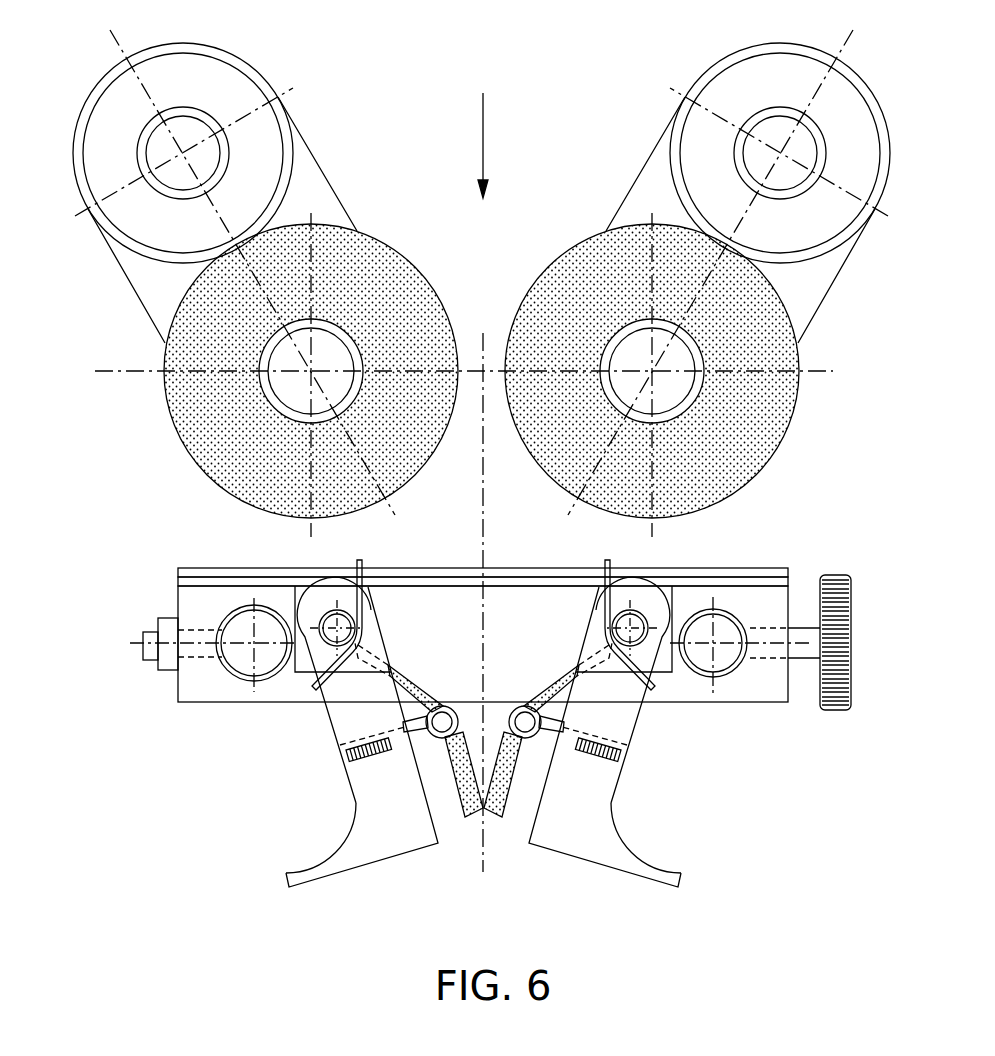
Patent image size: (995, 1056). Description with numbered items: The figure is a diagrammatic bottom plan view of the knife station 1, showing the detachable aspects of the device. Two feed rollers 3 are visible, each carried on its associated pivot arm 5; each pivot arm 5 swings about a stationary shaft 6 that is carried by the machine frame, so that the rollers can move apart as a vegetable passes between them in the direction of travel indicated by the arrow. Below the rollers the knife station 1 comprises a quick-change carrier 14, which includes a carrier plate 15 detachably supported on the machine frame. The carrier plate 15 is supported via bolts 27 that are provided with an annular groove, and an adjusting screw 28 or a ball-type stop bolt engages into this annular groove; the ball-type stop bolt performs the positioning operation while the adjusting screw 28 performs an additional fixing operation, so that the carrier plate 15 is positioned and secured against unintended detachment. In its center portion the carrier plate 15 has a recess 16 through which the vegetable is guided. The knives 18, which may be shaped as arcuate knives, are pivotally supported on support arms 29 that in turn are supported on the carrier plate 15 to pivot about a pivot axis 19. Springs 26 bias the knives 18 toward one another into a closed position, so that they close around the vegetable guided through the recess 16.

The knife station 1 is at (225, 744).
The feed roller 3 is at (212, 450).
The pivot arm 5 is at (145, 275).
The stationary shaft 6 is at (184, 150).
The quick-change carrier 14 is at (775, 568).
The carrier plate 15 is at (202, 569).
The recess 16 is at (540, 577).
The knife 18 is at (467, 817).
The pivot axis 19 is at (336, 597).
The spring 26 is at (646, 698).
The bolt 27 is at (263, 666).
The adjusting screw 28 is at (805, 655).
The clamping lever 29 is at (368, 801).